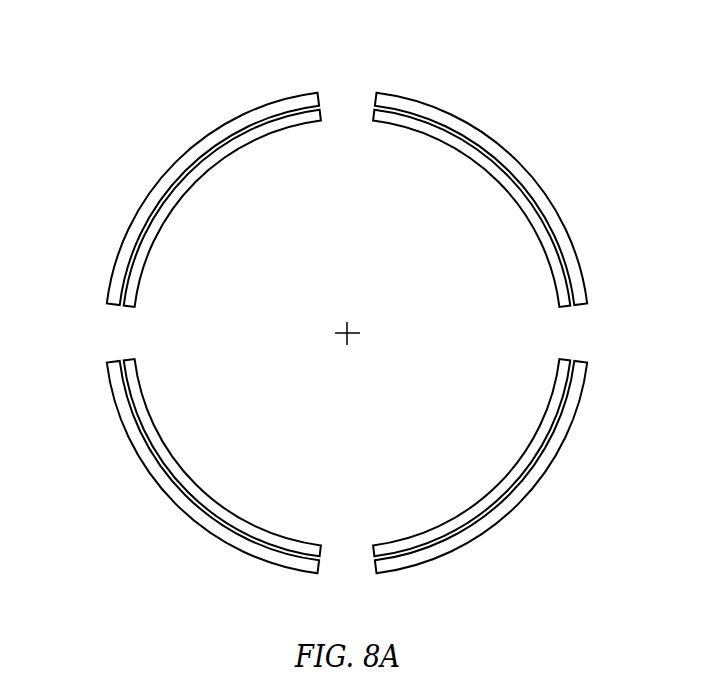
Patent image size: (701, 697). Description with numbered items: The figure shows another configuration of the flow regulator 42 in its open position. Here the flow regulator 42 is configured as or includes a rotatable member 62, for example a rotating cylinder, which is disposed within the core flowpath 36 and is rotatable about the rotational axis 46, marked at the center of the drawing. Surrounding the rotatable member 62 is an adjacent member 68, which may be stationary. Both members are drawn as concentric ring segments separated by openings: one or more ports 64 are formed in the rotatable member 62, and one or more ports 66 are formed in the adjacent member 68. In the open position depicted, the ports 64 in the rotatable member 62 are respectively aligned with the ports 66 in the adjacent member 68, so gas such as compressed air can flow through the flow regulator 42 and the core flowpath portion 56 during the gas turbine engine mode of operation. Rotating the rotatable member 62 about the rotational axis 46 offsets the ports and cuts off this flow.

The flow regulator 42 is at (546, 96).
The core flowpath 36 is at (393, 57).
The core flowpath portion 56 is at (365, 98).
The rotatable member 62 is at (510, 195).
The adjacent member 68 is at (549, 192).
The ports 64 is at (347, 120).
The ports 66 is at (330, 94).
The rotational axis 46 is at (352, 338).